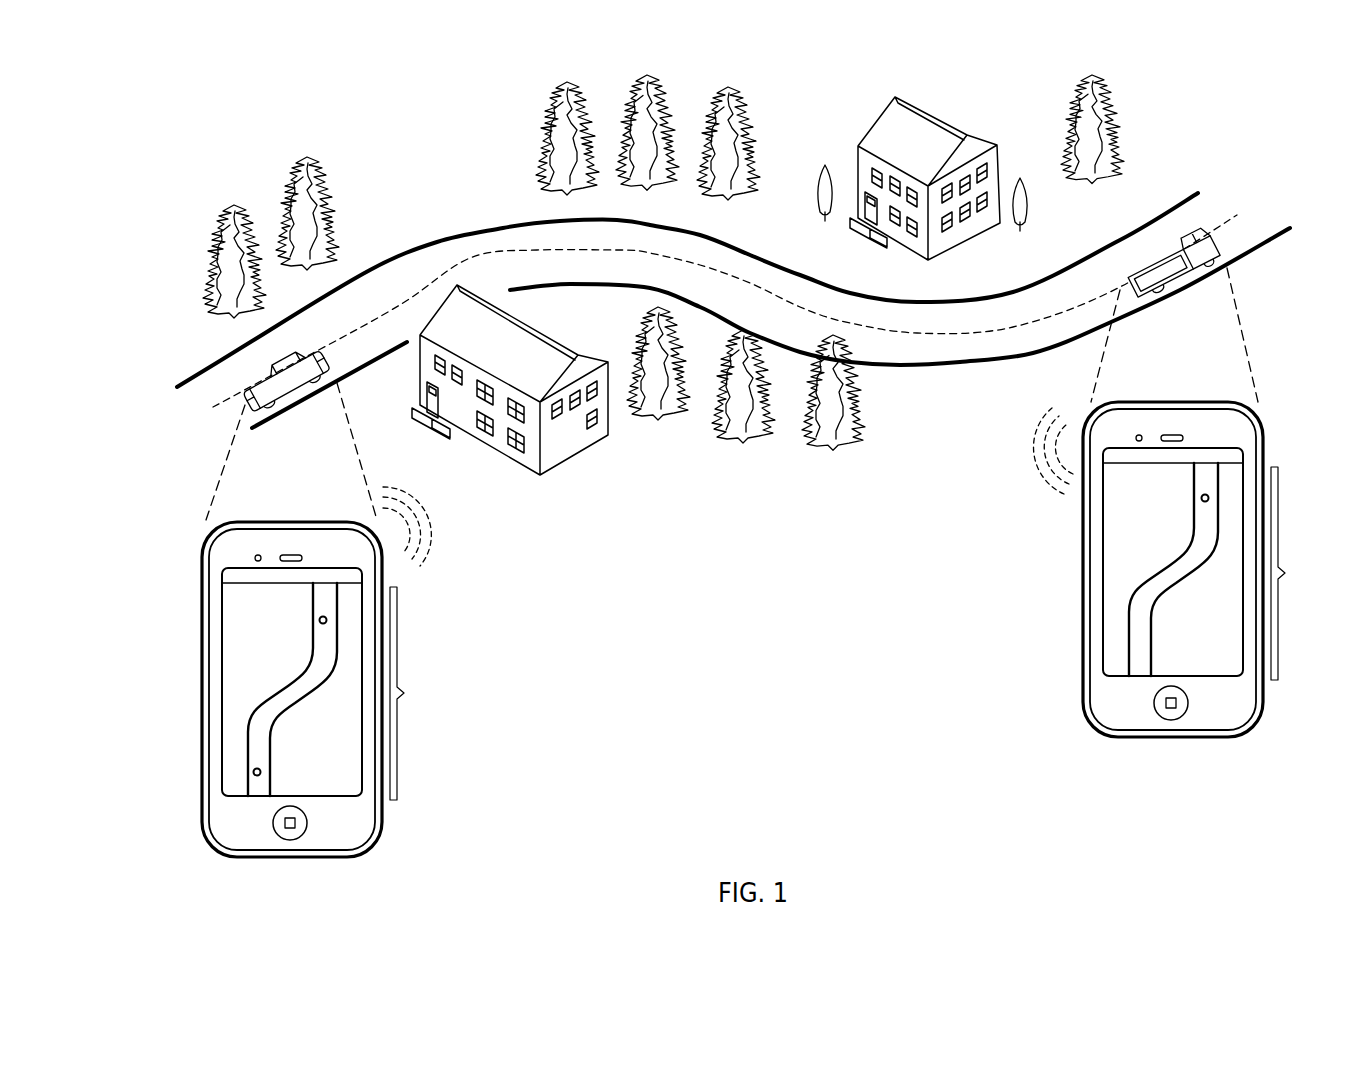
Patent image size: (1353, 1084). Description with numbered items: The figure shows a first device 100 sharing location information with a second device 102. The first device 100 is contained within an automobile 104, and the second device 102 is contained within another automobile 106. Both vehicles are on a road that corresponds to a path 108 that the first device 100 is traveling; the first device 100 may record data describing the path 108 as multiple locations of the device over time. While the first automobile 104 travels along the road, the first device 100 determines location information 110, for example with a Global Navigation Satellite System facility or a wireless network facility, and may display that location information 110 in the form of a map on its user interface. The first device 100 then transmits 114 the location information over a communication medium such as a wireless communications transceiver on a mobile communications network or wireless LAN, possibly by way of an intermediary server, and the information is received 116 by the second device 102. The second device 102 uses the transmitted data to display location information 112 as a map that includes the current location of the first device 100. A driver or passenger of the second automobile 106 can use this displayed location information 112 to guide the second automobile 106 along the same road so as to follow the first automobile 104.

The first device 100 is at (1170, 569).
The second device 102 is at (287, 689).
The automobile 104 is at (1185, 283).
The automobile 106 is at (298, 398).
The path 108 is at (474, 232).
The location information 110 is at (1216, 564).
The location information 112 is at (335, 684).
The transmits 114 is at (1022, 474).
The received 116 is at (443, 542).